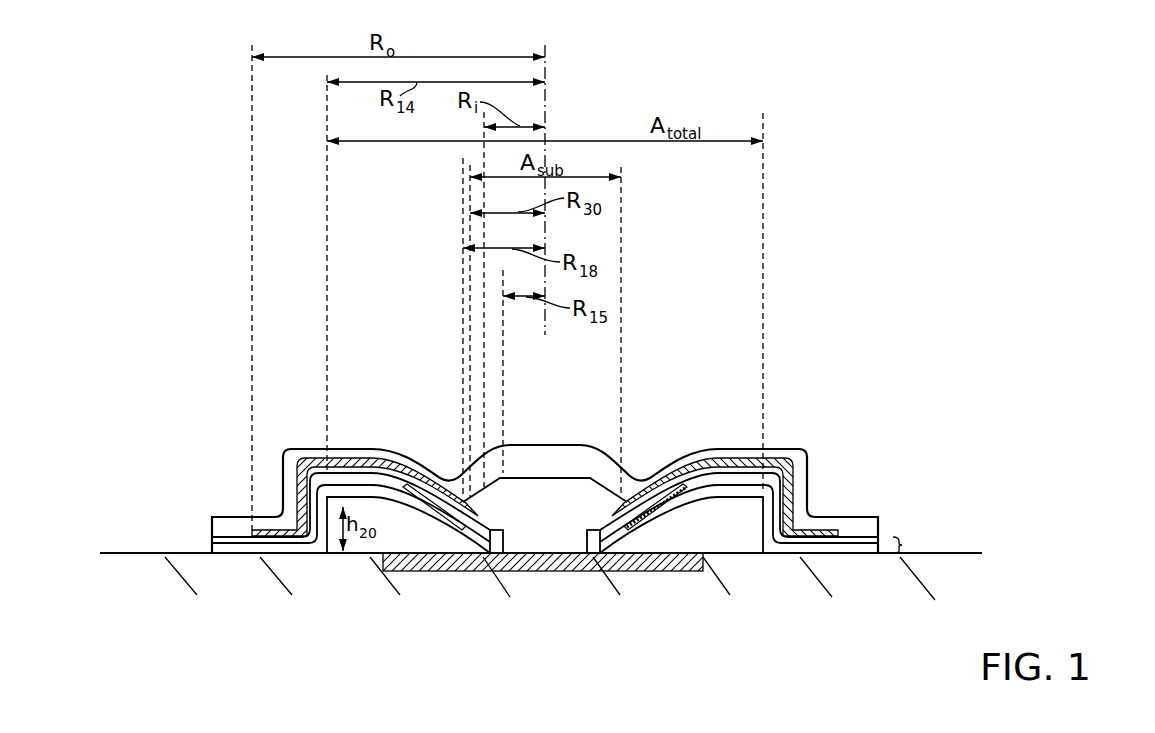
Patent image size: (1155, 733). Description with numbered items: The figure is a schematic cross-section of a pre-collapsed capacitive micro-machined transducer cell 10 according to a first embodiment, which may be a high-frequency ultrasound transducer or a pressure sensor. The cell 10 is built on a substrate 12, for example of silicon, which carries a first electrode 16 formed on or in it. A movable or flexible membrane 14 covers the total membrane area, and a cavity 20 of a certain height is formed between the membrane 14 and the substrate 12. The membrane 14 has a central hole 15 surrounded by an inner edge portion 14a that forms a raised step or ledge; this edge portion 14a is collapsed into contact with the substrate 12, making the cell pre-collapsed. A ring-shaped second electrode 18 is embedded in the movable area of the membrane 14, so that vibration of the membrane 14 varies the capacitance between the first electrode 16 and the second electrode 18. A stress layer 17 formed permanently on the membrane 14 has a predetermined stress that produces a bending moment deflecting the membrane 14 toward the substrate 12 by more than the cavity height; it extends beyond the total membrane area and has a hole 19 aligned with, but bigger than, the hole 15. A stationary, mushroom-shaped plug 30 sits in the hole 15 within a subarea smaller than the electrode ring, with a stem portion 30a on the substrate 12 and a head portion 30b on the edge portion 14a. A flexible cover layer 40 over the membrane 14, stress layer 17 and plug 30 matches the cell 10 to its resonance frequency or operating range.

The pre-collapsed capacitive micro-machined transducer cell 10 is at (960, 235).
The substrate 12 is at (935, 572).
The membrane 14 is at (903, 545).
The edge portion 14a is at (521, 446).
The hole 15 is at (546, 528).
The first electrode 16 is at (642, 566).
The stress layer 17 is at (297, 485).
The second electrode 18 is at (430, 472).
The hole 19 is at (571, 477).
The cavity 20 is at (379, 456).
The plug 30 is at (549, 500).
The stem portion 30a is at (565, 548).
The head portion 30b is at (518, 540).
The cover layer 40 is at (740, 450).